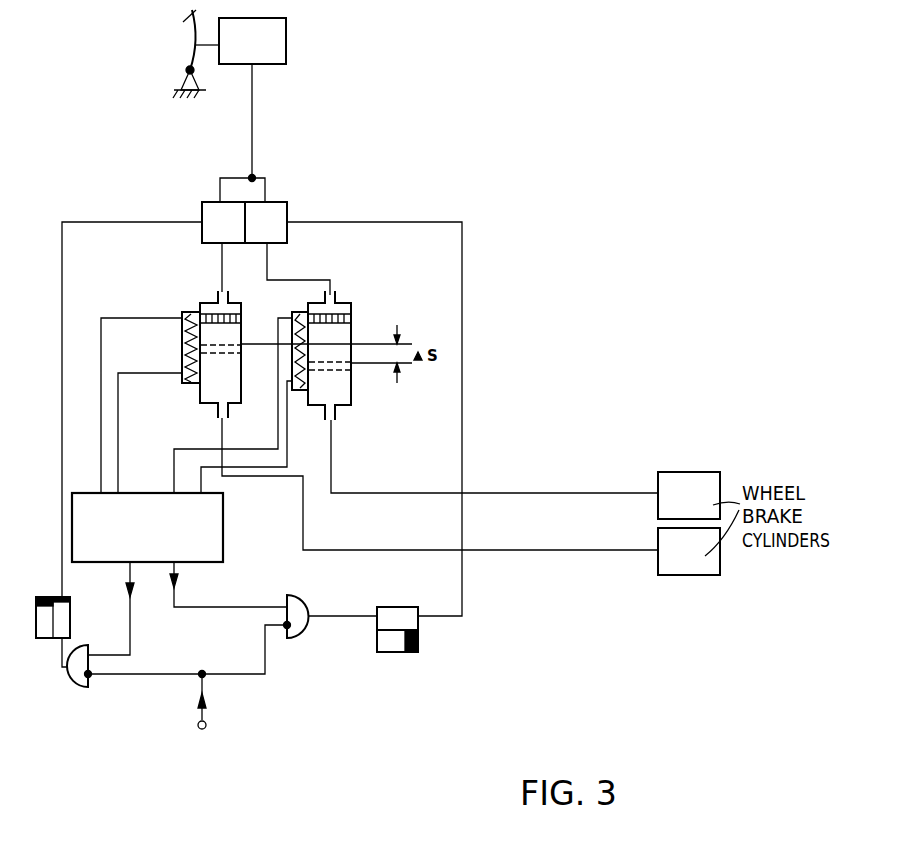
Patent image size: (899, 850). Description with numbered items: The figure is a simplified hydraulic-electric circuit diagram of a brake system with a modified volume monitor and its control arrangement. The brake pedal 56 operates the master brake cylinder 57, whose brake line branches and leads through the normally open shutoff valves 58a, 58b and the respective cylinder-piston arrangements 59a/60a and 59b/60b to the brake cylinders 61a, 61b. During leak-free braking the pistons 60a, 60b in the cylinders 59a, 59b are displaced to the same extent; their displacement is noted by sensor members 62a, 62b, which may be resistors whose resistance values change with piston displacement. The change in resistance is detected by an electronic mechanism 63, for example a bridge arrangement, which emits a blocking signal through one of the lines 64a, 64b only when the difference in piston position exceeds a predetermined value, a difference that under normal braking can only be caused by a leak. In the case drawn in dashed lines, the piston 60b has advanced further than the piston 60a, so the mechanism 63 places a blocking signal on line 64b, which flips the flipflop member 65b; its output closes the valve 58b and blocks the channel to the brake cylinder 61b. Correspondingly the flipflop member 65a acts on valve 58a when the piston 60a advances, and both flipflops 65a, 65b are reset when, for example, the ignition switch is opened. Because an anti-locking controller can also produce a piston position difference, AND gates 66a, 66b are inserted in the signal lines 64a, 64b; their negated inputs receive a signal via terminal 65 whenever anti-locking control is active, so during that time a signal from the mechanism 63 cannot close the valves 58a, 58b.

The brake pedal 56 is at (187, 30).
The master brake cylinder 57 is at (286, 42).
The shutoff valve 58a is at (205, 207).
The shutoff valve 58b is at (283, 214).
The cylinder 59a is at (182, 342).
The cylinder 59b is at (374, 337).
The piston 60a is at (200, 310).
The piston 60b is at (352, 310).
The brake cylinder 61a is at (684, 568).
The brake cylinder 61b is at (680, 481).
The sensor member 62a is at (184, 344).
The sensor member 62b is at (313, 340).
The electronic mechanism 63 is at (169, 527).
The line 64a is at (131, 620).
The line 64b is at (215, 608).
The terminal 65 is at (206, 730).
The flipflop member 65a is at (45, 630).
The flipflop member 65b is at (398, 645).
The AND gate 66a is at (86, 686).
The AND gate 66b is at (298, 636).